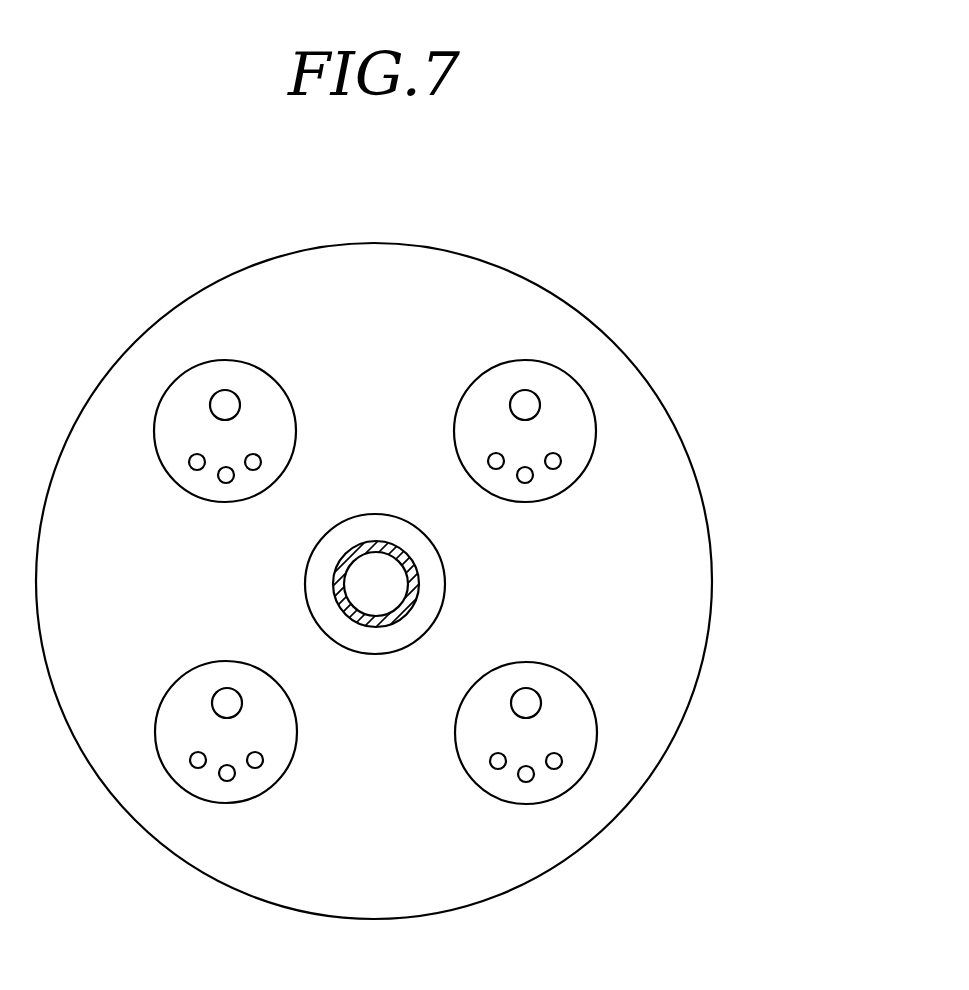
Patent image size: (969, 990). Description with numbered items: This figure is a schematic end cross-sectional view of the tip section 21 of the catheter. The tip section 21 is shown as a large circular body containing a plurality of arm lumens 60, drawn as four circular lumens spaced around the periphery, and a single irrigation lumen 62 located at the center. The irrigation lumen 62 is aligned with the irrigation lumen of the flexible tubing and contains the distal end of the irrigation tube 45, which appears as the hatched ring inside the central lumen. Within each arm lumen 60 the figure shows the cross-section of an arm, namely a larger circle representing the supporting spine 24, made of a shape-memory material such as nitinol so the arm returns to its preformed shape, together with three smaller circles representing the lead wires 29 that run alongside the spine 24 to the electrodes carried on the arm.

The tip section 21 is at (490, 262).
The supporting spine 24 is at (528, 390).
The lead wires 29 is at (496, 470).
The irrigation tube 45 is at (417, 605).
The arm lumens 60 is at (577, 384).
The irrigation lumen 62 is at (445, 583).